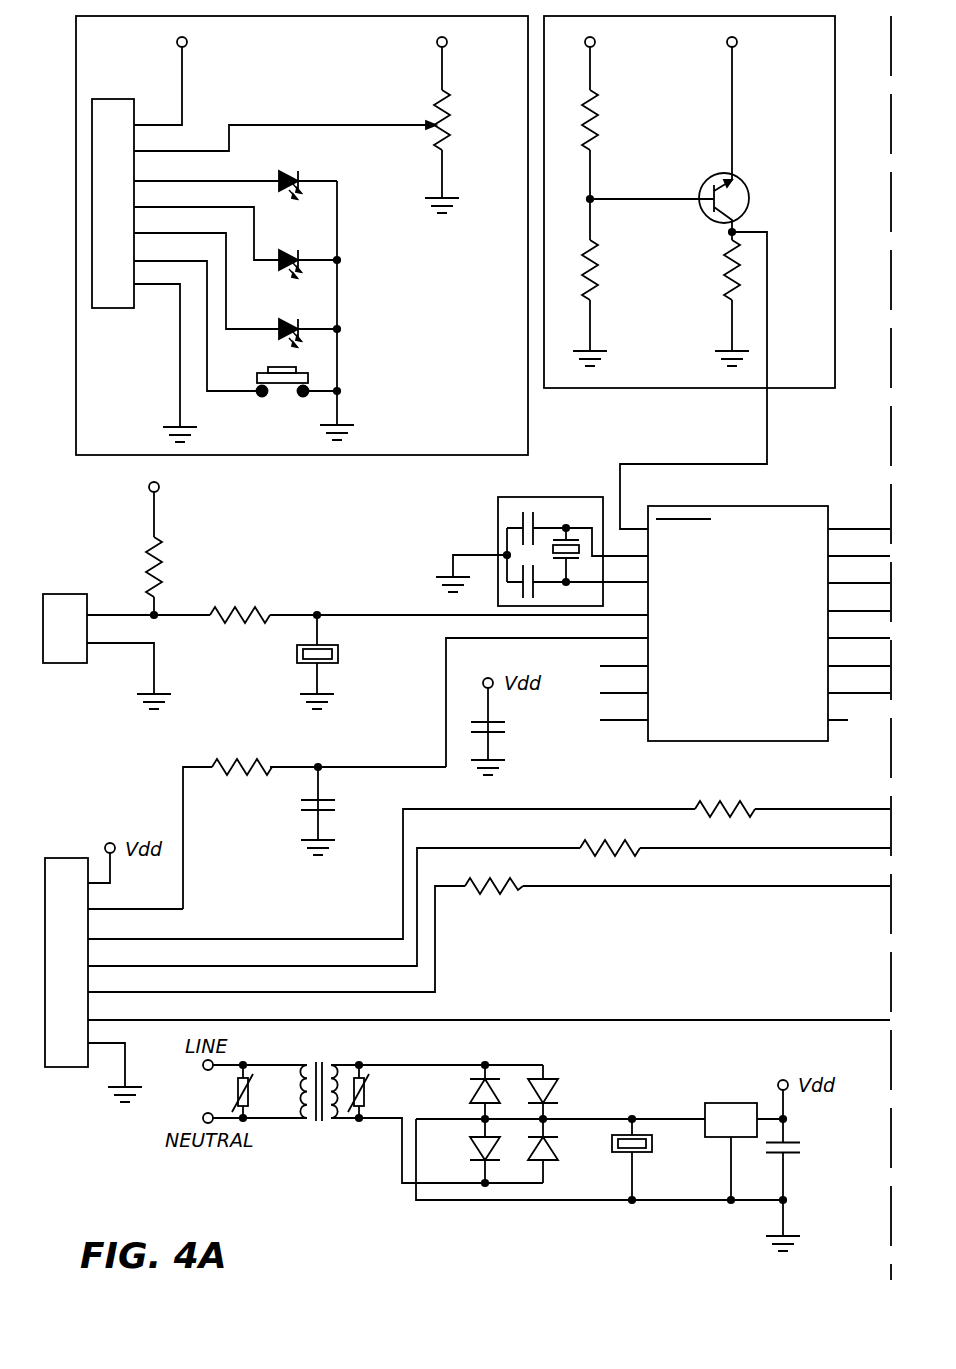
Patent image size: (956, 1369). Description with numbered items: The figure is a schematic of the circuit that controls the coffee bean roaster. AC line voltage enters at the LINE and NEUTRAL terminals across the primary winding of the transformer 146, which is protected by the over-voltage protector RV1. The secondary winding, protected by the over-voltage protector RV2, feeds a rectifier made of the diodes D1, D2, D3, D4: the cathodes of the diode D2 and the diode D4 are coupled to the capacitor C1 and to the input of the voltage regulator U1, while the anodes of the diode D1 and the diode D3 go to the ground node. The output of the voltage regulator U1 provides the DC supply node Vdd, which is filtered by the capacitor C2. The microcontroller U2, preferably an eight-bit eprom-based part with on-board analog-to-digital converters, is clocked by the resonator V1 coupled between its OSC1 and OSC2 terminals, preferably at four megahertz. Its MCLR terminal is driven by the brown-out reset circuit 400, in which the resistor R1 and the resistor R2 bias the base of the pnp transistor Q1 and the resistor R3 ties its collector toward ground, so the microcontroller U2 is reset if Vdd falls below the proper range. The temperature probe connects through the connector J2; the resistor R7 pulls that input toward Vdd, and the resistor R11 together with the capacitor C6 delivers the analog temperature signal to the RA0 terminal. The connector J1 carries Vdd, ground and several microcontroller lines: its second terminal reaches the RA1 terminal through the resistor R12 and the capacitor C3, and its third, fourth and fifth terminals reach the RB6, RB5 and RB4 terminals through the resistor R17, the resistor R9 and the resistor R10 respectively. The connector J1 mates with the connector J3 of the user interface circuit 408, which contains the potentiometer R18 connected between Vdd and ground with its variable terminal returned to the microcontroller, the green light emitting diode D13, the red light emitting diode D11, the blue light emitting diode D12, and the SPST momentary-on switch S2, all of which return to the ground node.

The user interface circuit 408 is at (325, 53).
The brown-out reset circuit 400 is at (818, 53).
The transformer 146 is at (319, 1078).
The connector J3 is at (113, 188).
The potentiometer R18 is at (462, 122).
The green light emitting diode D13 is at (348, 180).
The red light emitting diode D11 is at (335, 260).
The blue light emitting diode D12 is at (340, 329).
The SPST momentary-on switch S2 is at (283, 393).
The resistor R1 is at (613, 115).
The resistor R2 is at (605, 282).
The resistor R3 is at (717, 299).
The pnp bipolar transistor Q1 is at (689, 131).
The connector J2 is at (65, 613).
The resistor R7 is at (179, 545).
The resistor R11 is at (240, 602).
The capacitor C6 is at (337, 662).
The resonator V1 is at (494, 539).
The microcontroller U2 is at (733, 624).
The resistor R12 is at (242, 754).
The capacitor C3 is at (338, 811).
The connector J1 is at (66, 947).
The resistor R17 is at (725, 797).
The resistor R9 is at (610, 836).
The resistor R10 is at (494, 874).
The over-voltage protector RV1 is at (262, 1091).
The over-voltage protector RV2 is at (379, 1091).
The diode D1 is at (469, 1092).
The diode D2 is at (560, 1092).
The diode D3 is at (466, 1151).
The diode D4 is at (560, 1151).
The capacitor C1 is at (651, 1159).
The voltage regulator U1 is at (744, 1151).
The capacitor C2 is at (800, 1170).